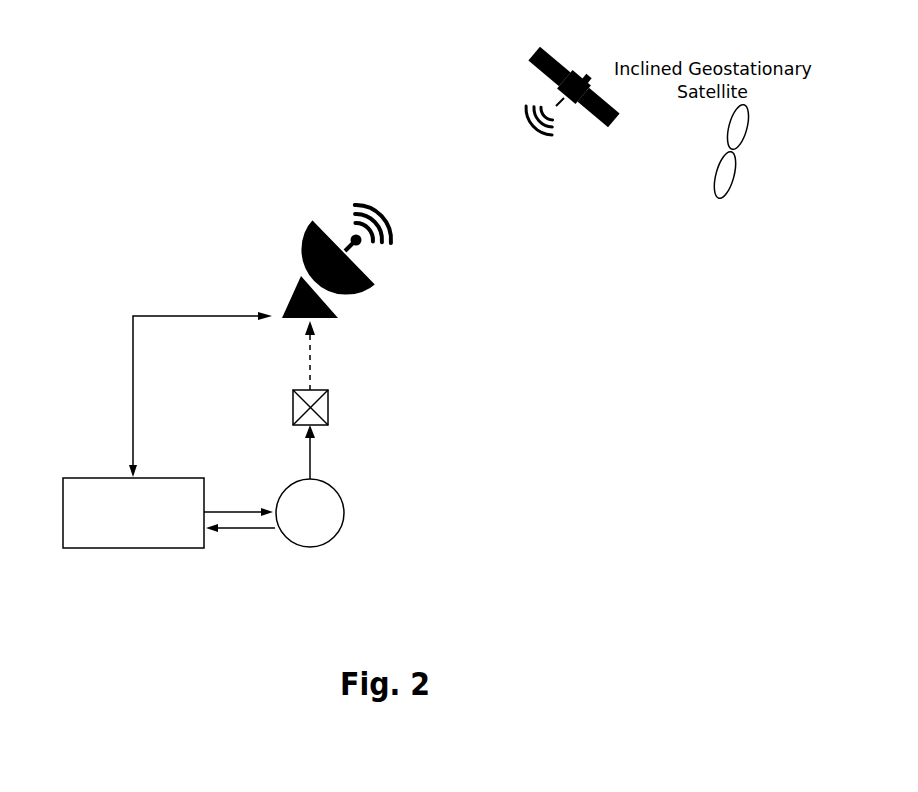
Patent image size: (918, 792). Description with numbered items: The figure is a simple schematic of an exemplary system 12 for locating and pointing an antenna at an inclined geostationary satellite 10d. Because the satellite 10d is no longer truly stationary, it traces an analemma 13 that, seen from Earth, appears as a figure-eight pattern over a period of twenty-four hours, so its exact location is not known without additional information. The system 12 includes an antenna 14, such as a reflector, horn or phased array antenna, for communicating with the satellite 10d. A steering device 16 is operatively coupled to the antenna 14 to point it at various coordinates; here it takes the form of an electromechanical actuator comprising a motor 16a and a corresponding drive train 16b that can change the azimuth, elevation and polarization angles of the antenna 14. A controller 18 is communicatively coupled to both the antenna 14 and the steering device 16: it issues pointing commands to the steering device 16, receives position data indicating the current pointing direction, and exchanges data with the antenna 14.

The inclined geostationary satellite 10d is at (610, 134).
The system 12 is at (124, 184).
The analemma 13 is at (735, 168).
The antenna 14 is at (377, 285).
The steering device 16 is at (385, 444).
The motor 16a is at (344, 512).
The drive train 16b is at (328, 404).
The controller 18 is at (128, 549).